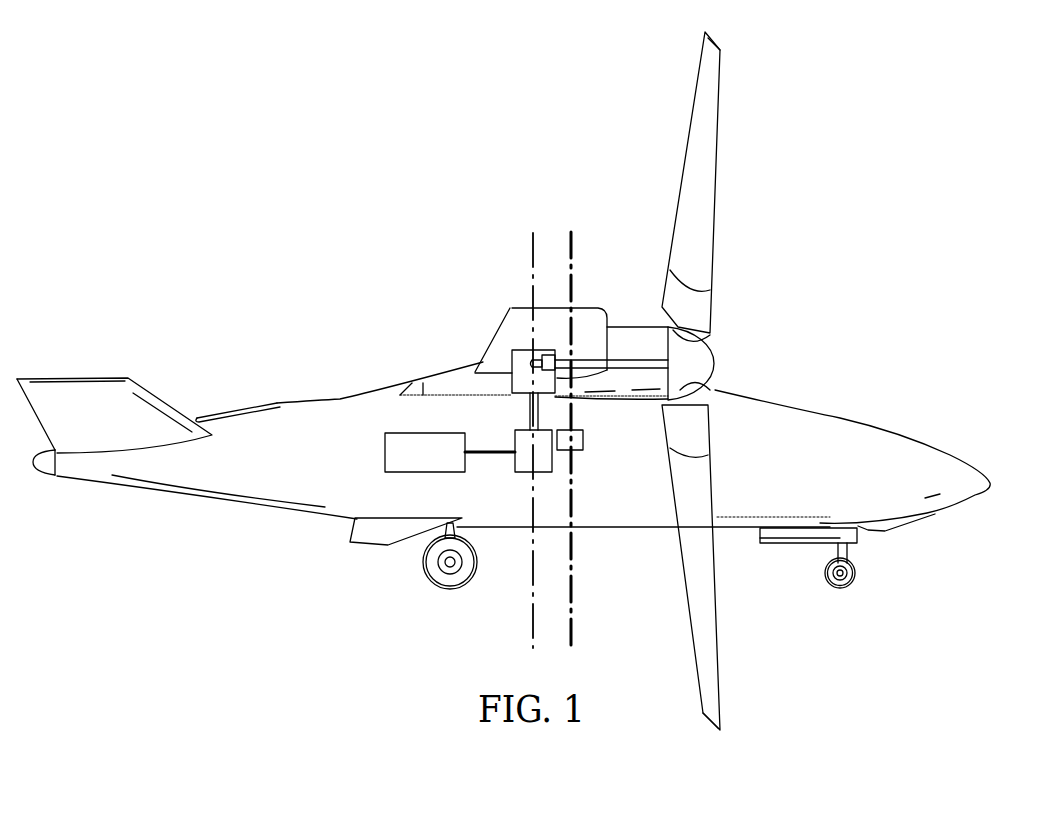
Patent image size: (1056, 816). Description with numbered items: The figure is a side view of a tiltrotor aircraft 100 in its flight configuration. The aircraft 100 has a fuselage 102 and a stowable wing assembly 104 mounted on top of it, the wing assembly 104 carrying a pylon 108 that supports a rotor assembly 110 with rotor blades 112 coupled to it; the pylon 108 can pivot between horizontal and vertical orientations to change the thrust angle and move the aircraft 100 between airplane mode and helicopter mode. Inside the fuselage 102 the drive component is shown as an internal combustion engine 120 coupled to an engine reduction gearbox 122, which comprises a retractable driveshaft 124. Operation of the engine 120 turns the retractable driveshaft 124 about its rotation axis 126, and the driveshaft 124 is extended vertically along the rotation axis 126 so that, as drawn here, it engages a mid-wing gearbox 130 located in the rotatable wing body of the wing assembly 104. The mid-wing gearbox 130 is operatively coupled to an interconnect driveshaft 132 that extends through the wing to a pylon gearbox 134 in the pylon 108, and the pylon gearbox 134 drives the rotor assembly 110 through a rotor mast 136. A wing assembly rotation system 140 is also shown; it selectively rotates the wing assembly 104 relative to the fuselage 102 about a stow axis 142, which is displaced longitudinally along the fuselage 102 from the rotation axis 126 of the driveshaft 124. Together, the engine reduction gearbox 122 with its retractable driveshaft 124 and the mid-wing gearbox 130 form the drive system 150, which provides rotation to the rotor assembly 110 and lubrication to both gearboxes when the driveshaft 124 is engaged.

The aircraft 100 is at (285, 192).
The fuselage 102 is at (627, 530).
The stowable wing assembly 104 is at (430, 373).
The pylon 108 is at (642, 324).
The rotor assembly 110 is at (725, 363).
The rotor blades 112 is at (717, 173).
The internal combustion engine 120 is at (382, 452).
The engine reduction gearbox 122 is at (515, 462).
The retractable driveshaft 124 is at (528, 422).
The rotation axis 126 is at (533, 635).
The mid-wing gearbox 130 is at (520, 350).
The interconnect driveshaft 132 is at (512, 362).
The pylon gearbox 134 is at (551, 356).
The rotor mast 136 is at (618, 370).
The wing assembly rotation system 140 is at (583, 442).
The stow axis 142 is at (573, 250).
The drive system 150 is at (586, 492).